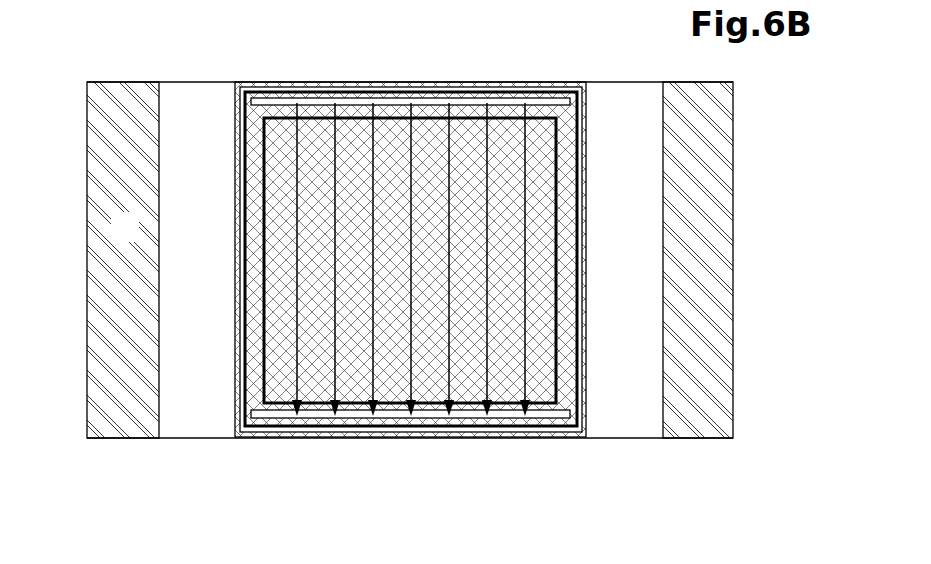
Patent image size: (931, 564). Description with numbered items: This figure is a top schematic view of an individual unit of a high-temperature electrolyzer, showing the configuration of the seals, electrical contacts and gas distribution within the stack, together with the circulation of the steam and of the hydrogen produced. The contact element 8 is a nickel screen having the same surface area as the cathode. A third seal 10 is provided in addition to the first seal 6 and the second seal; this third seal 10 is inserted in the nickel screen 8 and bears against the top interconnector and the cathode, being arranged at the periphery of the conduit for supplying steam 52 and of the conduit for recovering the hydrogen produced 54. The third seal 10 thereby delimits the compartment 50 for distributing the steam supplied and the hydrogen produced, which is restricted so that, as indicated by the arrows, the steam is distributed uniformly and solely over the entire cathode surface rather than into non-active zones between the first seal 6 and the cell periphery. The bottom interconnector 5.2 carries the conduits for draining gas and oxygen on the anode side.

The first seal 6 is at (133, 238).
The bottom interconnector 5.2 is at (203, 98).
The third seal 10 is at (230, 148).
The contact element 8 is at (577, 120).
The conduit for supplying steam 52 is at (393, 105).
The compartment for distributing the steam supplied and the hydrogen produced 50 is at (427, 150).
The conduit for recovering the hydrogen produced 54 is at (510, 415).